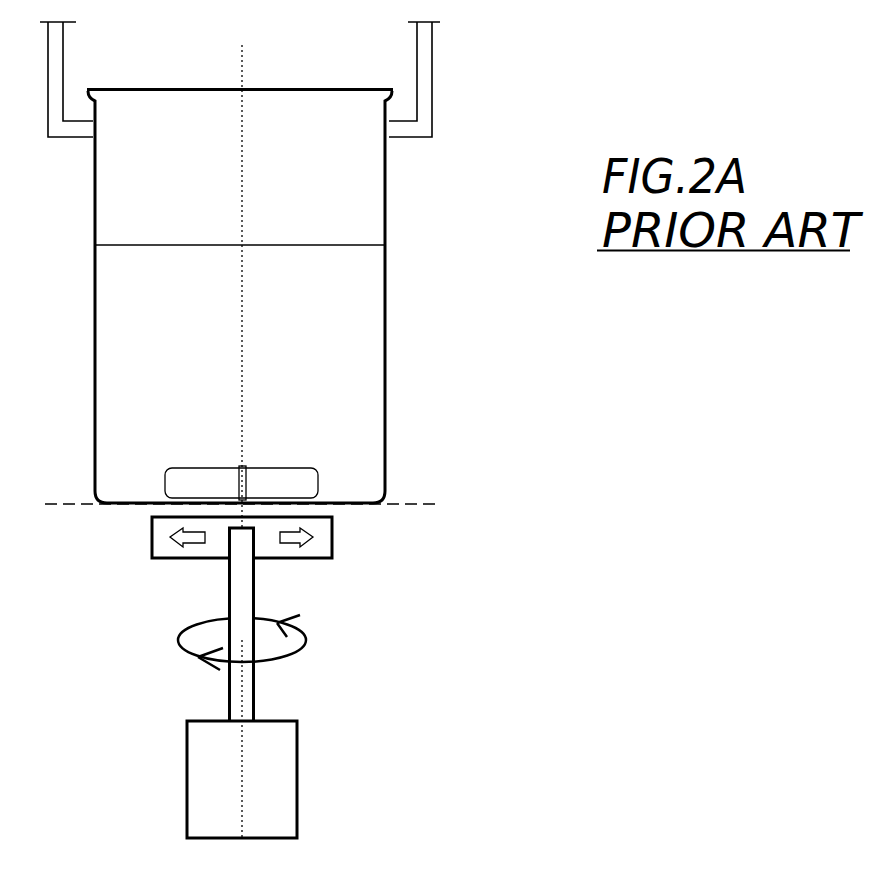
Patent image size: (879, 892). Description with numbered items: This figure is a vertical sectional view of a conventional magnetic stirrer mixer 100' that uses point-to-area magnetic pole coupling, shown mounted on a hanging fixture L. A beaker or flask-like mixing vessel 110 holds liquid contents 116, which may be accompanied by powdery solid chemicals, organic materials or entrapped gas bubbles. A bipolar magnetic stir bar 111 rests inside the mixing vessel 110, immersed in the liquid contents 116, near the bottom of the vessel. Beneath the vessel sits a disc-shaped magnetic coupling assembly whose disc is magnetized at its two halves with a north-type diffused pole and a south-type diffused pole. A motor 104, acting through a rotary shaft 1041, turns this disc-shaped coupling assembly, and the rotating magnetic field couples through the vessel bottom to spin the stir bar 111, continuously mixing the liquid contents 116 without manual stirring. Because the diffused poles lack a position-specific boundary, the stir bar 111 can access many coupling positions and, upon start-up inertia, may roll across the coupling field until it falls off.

The magnetic stirrer mixer 100' is at (517, 94).
The hanging fixture L is at (63, 52).
The mixing vessel 110 is at (390, 163).
The liquid contents 116 is at (351, 292).
The magnetic stir bar 111 is at (247, 478).
The rotary shaft 1041 is at (255, 705).
The motor 104 is at (280, 774).